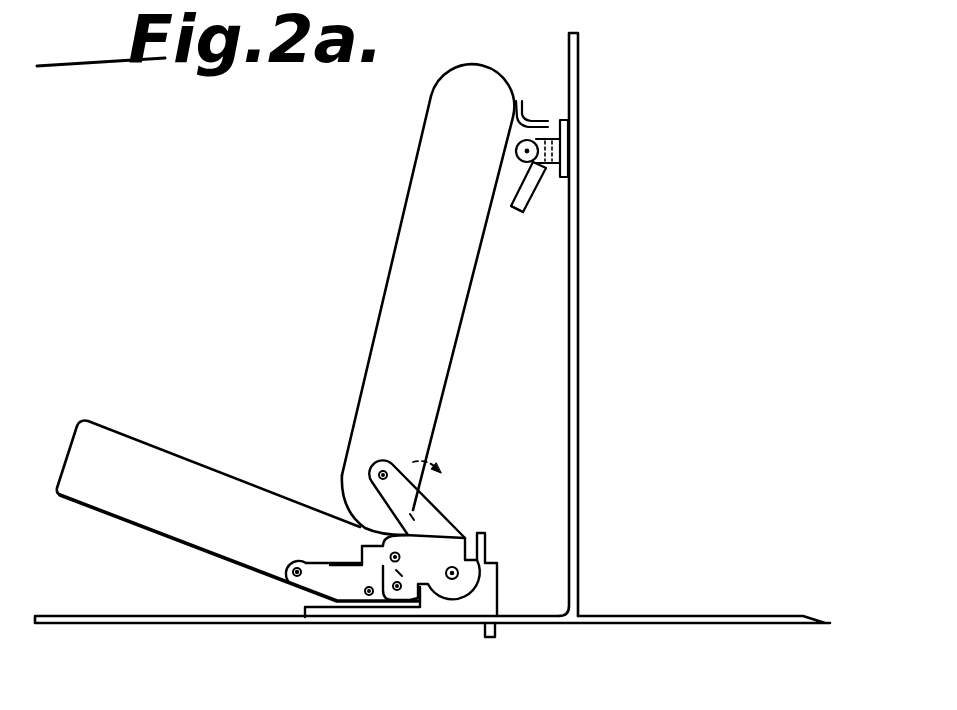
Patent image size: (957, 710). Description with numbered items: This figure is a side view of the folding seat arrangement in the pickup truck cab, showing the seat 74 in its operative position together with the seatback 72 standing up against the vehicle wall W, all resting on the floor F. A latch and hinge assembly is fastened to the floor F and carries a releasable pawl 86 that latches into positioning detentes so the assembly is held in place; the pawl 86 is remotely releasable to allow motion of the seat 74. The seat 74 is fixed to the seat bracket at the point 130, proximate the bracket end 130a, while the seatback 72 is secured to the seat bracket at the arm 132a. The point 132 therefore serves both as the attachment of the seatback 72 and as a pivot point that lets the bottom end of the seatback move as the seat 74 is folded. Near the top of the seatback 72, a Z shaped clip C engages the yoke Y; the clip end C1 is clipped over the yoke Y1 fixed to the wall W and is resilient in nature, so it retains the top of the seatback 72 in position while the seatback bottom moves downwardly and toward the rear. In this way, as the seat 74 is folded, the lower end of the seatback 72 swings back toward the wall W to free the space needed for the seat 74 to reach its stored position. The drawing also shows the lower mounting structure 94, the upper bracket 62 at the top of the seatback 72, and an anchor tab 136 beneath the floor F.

The upper bracket 62 is at (523, 100).
The seatback 72 is at (408, 222).
The folding seat 74 is at (118, 445).
The releasable pawl 86 is at (393, 556).
The mounting bracket 94 is at (435, 602).
The seat attachment point 130 is at (292, 563).
The end 130a is at (313, 570).
The pivot point 132 is at (392, 467).
The arm 132a is at (417, 499).
The anchor tab 136 is at (495, 636).
The floor F is at (190, 623).
The wall W is at (580, 378).
The yoke Y is at (567, 153).
The yoke Y1 is at (552, 128).
The clip C is at (533, 190).
The clip end C1 is at (517, 213).